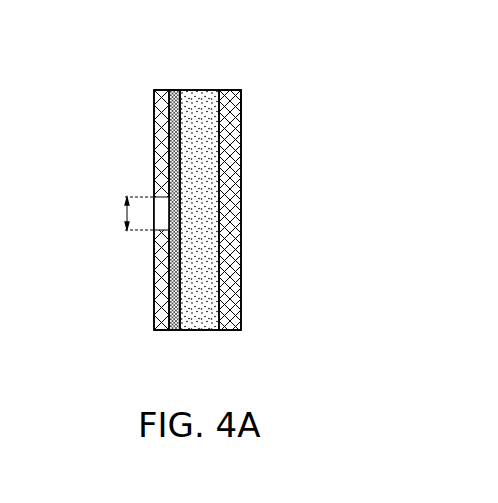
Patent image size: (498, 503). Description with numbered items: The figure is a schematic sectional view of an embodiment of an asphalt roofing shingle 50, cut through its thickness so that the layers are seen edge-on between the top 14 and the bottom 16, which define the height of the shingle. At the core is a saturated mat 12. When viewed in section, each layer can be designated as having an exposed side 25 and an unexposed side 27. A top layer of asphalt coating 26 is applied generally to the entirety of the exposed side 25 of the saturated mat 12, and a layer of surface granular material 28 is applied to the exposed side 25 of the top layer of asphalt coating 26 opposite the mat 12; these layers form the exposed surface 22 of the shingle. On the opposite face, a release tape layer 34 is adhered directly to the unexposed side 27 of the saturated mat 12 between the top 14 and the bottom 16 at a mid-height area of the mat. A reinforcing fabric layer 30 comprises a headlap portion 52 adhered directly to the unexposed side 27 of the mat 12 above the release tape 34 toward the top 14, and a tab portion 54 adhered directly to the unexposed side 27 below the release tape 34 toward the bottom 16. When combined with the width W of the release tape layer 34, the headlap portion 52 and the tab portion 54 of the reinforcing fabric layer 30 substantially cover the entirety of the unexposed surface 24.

The asphalt roofing shingle 50 is at (280, 73).
The top 14 is at (197, 90).
The bottom 16 is at (207, 332).
The saturated mat 12 is at (172, 332).
The exposed surface 22 is at (242, 222).
The exposed side 25 is at (264, 182).
The top layer of asphalt coating 26 is at (207, 290).
The unexposed side 27 is at (113, 186).
The unexposed surface 24 is at (156, 170).
The layer of surface granular material 28 is at (241, 118).
The reinforcing fabric layer 30 is at (158, 98).
The release tape layer 34 is at (159, 232).
The headlap portion 52 is at (156, 138).
The tab portion 54 is at (158, 283).
The width of release tape layer W is at (120, 212).